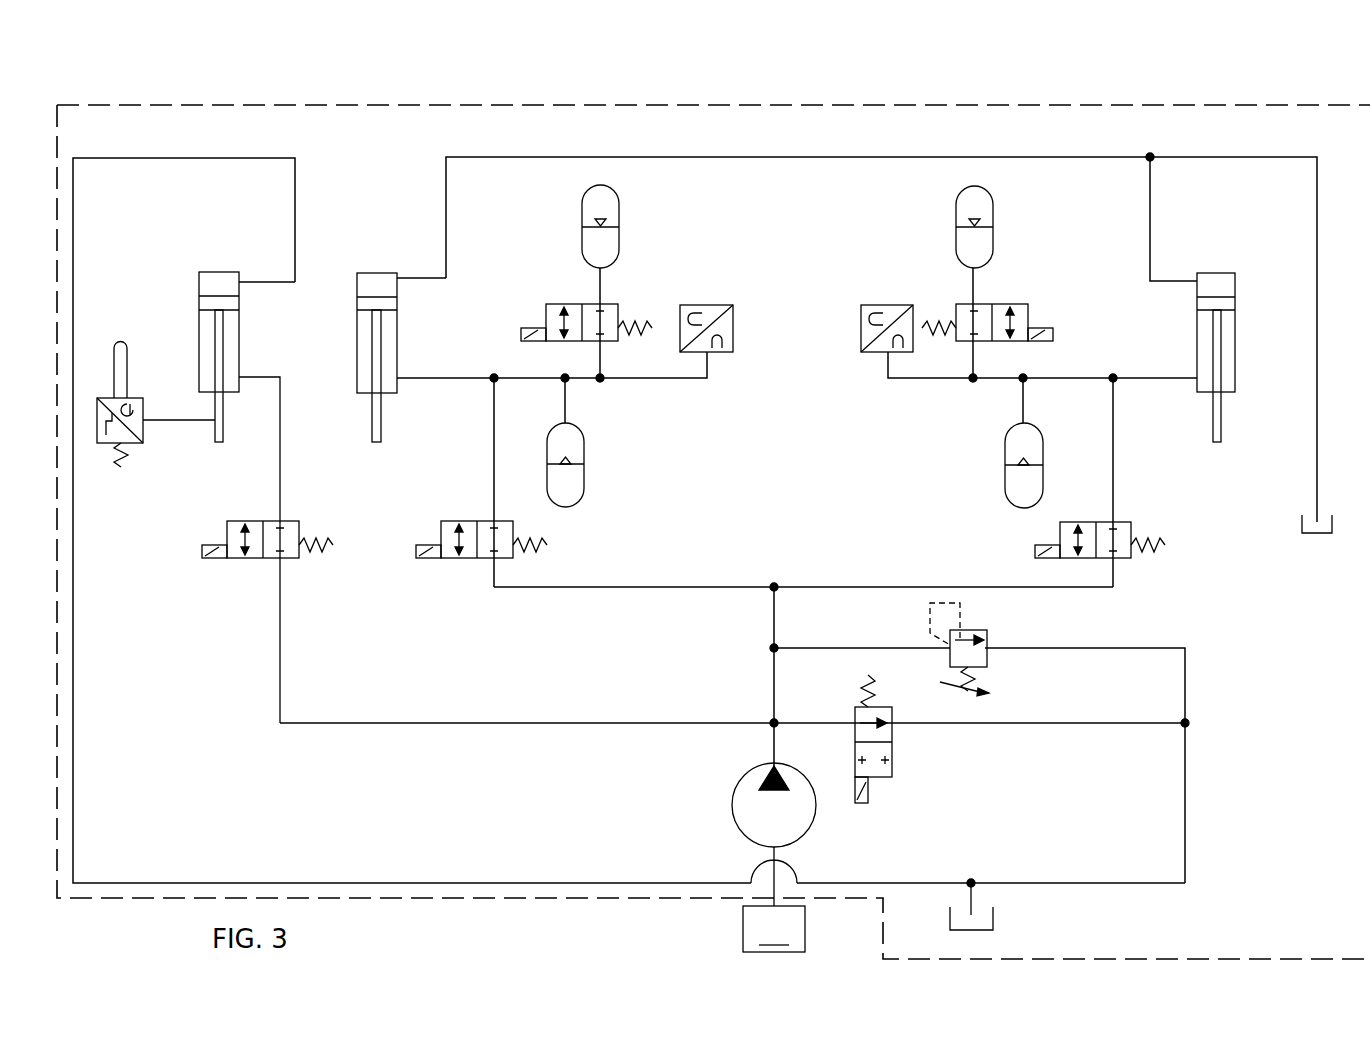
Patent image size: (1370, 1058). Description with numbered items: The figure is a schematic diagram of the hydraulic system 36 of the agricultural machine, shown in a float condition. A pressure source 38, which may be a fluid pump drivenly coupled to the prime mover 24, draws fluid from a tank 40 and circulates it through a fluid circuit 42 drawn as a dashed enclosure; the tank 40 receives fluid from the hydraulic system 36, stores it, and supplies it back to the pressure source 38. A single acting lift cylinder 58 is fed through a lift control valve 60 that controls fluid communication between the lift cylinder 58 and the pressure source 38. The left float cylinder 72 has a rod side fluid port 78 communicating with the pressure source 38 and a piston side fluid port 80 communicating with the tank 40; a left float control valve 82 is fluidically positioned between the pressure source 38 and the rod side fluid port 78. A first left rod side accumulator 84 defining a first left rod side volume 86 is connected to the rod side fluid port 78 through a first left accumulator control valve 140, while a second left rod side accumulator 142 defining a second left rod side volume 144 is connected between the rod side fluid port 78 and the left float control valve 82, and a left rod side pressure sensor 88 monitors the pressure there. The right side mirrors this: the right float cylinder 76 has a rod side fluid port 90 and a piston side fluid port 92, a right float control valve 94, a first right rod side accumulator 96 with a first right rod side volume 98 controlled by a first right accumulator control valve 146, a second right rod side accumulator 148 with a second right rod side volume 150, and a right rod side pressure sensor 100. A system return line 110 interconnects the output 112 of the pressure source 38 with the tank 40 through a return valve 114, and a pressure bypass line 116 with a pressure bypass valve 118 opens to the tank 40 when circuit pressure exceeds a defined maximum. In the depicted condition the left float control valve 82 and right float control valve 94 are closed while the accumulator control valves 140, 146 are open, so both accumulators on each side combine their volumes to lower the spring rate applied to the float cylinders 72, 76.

The prime mover 24 is at (774, 929).
The hydraulic system 36 is at (1217, 88).
The pressure source 38 is at (733, 790).
The tank 40 is at (1317, 533).
The fluid circuit 42 is at (531, 105).
The lift cylinder 58 is at (199, 284).
The lift control valve 60 is at (235, 558).
The left float cylinder 72 is at (397, 336).
The right float cylinder 76 is at (1235, 278).
The rod side fluid port 78 is at (397, 378).
The piston side fluid port 80 is at (397, 277).
The left float control valve 82 is at (448, 558).
The first left rod side accumulator 84 is at (618, 200).
The first left rod side volume 86 is at (598, 202).
The left rod side pressure sensor 88 is at (705, 305).
The rod side fluid port 90 is at (1197, 390).
The piston side fluid port 92 is at (1197, 296).
The right float control valve 94 is at (1085, 522).
The first right rod side accumulator 96 is at (958, 200).
The first right rod side volume 98 is at (974, 203).
The right rod side pressure sensor 100 is at (885, 305).
The system return line 110 is at (1045, 723).
The output 112 is at (774, 766).
The return valve 114 is at (892, 777).
The pressure bypass line 116 is at (1113, 648).
The pressure bypass valve 118 is at (985, 632).
The first left accumulator control valve 140 is at (560, 304).
The second left rod side accumulator 142 is at (584, 435).
The second left rod side volume 144 is at (571, 492).
The first right accumulator control valve 146 is at (1018, 304).
The second right rod side accumulator 148 is at (1005, 435).
The second right rod side volume 150 is at (1021, 492).